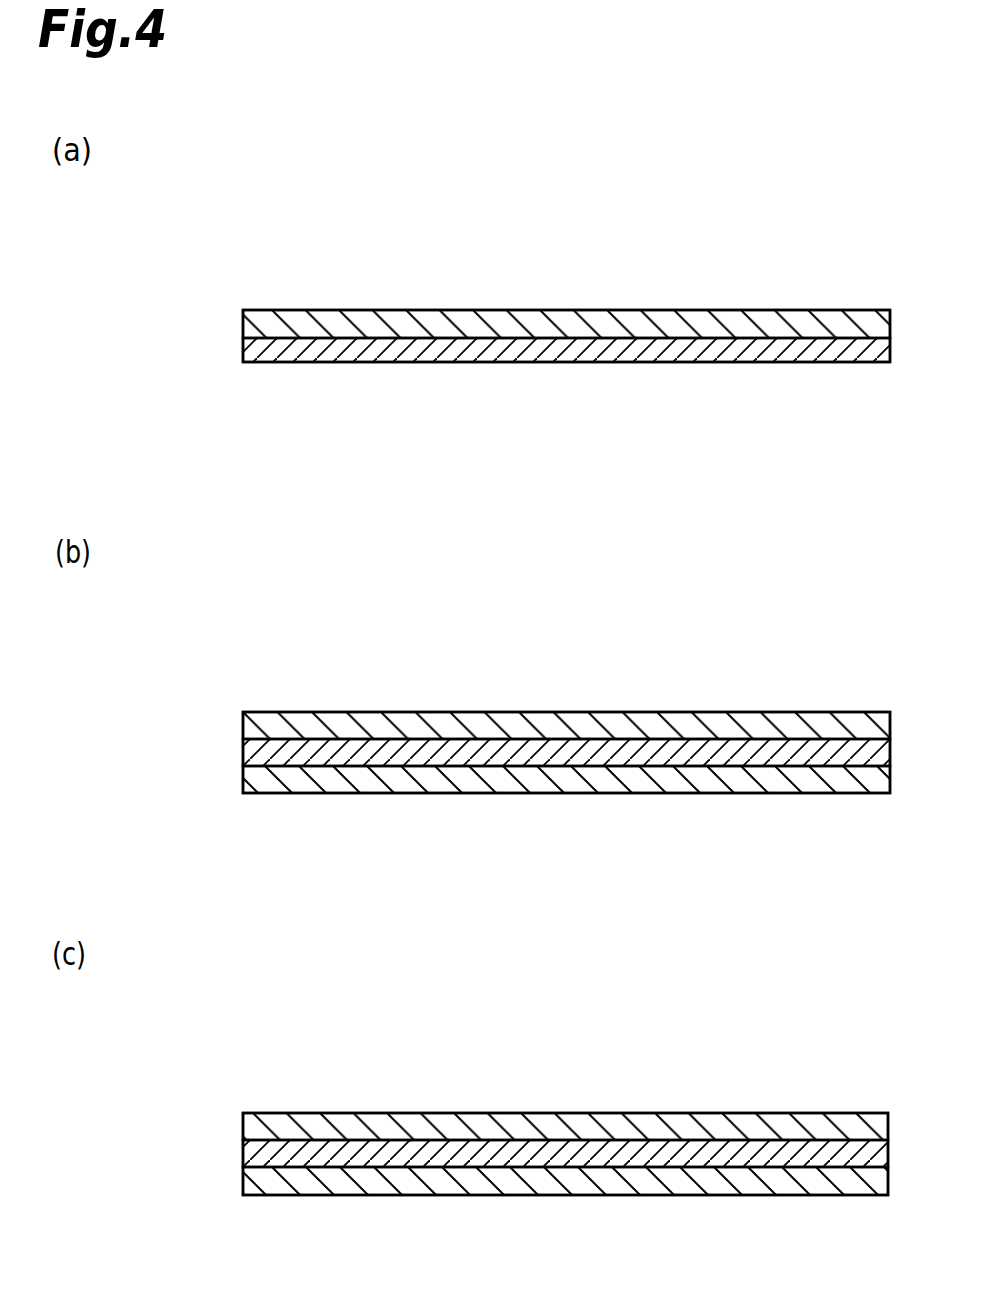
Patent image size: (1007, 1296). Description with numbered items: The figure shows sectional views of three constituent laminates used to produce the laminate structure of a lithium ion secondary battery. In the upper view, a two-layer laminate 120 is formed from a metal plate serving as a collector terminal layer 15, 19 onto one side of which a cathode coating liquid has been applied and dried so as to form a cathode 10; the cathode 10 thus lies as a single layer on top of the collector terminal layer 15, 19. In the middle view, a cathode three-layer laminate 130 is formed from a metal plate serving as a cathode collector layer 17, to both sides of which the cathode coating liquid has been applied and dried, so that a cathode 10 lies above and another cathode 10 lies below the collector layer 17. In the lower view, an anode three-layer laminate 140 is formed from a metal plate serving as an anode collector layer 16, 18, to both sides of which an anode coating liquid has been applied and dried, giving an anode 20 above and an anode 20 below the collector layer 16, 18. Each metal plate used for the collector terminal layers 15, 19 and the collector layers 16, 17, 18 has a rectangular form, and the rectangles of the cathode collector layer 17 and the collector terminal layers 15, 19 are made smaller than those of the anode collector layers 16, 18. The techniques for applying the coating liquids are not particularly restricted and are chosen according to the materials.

The cathode 10 is at (250, 319).
The collector terminal layer 15 is at (250, 350).
The collector terminal layer 19 is at (511, 360).
The two-layer laminate 120 is at (853, 233).
The cathode collector layer 17 is at (250, 747).
The cathode three-layer laminate 130 is at (853, 635).
The anode 20 is at (252, 1128).
The anode collector layer 16 is at (248, 1151).
The anode collector layer 18 is at (509, 1162).
The anode three-layer laminate 140 is at (852, 1037).